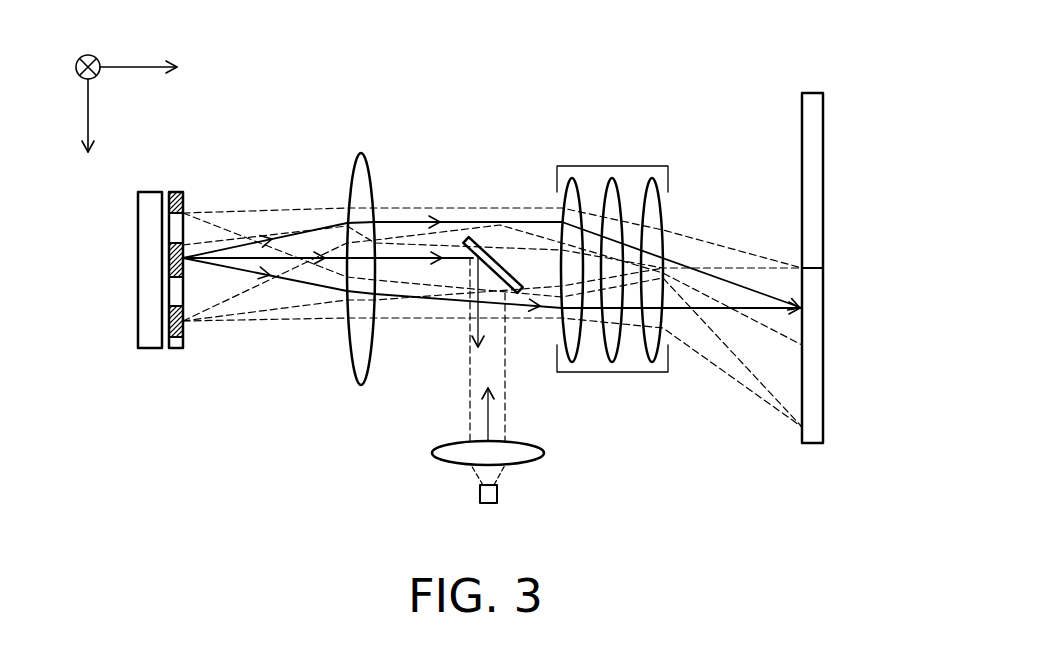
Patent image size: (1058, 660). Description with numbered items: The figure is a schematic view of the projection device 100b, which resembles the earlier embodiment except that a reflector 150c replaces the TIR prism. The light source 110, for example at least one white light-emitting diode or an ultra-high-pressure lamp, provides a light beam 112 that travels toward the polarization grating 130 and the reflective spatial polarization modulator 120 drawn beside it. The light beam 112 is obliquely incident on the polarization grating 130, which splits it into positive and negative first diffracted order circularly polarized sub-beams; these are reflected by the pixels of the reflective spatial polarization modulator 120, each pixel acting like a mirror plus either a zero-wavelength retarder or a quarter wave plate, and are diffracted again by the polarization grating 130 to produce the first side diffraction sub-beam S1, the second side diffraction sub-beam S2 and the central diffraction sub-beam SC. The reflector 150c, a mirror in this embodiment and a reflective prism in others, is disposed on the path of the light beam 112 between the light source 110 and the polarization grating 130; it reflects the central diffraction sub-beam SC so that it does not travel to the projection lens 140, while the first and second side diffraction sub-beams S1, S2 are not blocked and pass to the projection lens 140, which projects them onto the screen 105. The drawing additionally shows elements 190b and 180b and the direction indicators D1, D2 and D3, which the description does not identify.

The projection device 100b is at (895, 529).
The screen 105 is at (812, 170).
The light source 110 is at (488, 503).
The light beam 112 is at (488, 415).
The reflective spatial polarization modulator 120 is at (152, 192).
The polarization grating 130 is at (177, 192).
The projection lens 140 is at (603, 190).
The reflector 150c is at (502, 257).
The sensing lens 180b is at (443, 465).
The lens 190b is at (350, 178).
The first side diffraction sub-beam S1 is at (298, 223).
The second side diffraction sub-beam S2 is at (237, 273).
The central diffraction sub-beam SC is at (418, 258).
The first direction D1 is at (90, 136).
The second direction D2 is at (79, 50).
The third direction D3 is at (156, 67).